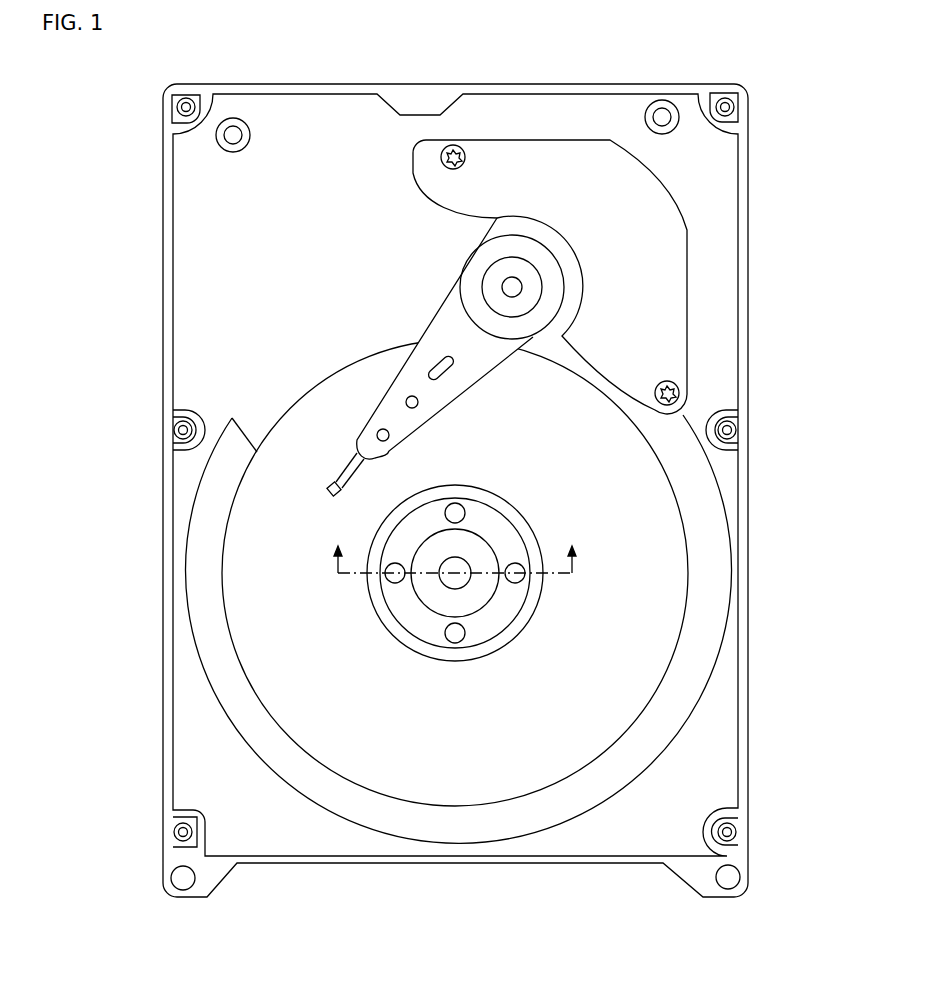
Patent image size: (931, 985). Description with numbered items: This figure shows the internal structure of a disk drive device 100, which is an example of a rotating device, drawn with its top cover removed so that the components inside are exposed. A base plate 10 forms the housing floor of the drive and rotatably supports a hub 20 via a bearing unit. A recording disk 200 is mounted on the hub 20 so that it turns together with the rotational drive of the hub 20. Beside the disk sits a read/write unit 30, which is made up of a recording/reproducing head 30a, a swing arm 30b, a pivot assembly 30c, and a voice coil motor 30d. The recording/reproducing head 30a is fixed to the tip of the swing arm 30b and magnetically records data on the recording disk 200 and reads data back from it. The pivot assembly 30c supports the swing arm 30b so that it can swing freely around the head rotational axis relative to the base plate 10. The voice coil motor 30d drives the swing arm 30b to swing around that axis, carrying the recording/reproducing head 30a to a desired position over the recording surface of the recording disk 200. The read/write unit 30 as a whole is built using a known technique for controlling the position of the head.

The disk drive device 100 is at (471, 952).
The base plate 10 is at (712, 228).
The hub 20 is at (482, 555).
The read/write unit 30 is at (90, 168).
The recording/reproducing head 30a is at (335, 485).
The swing arm 30b is at (440, 322).
The pivot assembly 30c is at (478, 262).
The voice coil motor 30d is at (500, 182).
The recording disk 200 is at (657, 603).